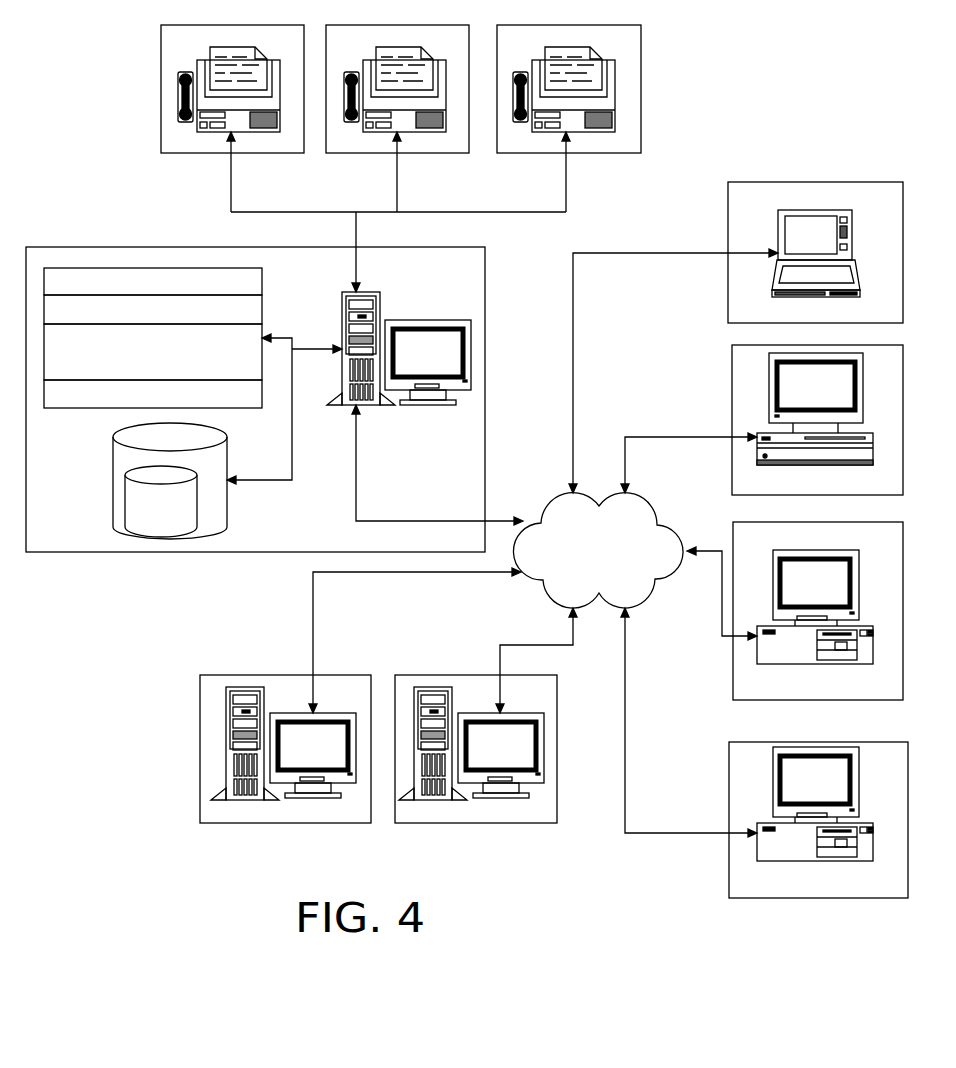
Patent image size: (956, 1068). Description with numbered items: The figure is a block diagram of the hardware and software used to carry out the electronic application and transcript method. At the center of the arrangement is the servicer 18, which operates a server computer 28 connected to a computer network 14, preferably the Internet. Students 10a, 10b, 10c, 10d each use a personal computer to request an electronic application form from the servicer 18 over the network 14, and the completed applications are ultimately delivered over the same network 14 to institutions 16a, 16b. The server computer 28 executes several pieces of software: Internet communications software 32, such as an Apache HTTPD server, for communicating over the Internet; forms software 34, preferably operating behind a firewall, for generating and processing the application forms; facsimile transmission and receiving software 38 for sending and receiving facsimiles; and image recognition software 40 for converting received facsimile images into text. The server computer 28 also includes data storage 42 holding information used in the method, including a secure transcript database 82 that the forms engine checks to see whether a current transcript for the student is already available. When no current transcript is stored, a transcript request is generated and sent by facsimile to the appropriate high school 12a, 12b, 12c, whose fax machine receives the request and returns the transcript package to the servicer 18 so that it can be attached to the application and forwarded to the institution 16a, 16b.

The high school 12a is at (232, 107).
The high school 12b is at (397, 107).
The high school 12c is at (569, 107).
The servicer 18 is at (485, 310).
The server computer 28 is at (380, 298).
The Internet communications software 32 is at (262, 282).
The forms software 34 is at (262, 312).
The facsimile transmission and receiving software 38 is at (262, 366).
The image recognition software 40 is at (240, 408).
The data storage 42 is at (228, 505).
The secure transcript database 82 is at (126, 500).
The computer network 14 is at (650, 596).
The student 10a is at (794, 254).
The student 10b is at (794, 420).
The student 10c is at (795, 611).
The student 10d is at (796, 820).
The institution 16a is at (285, 738).
The institution 16b is at (476, 738).